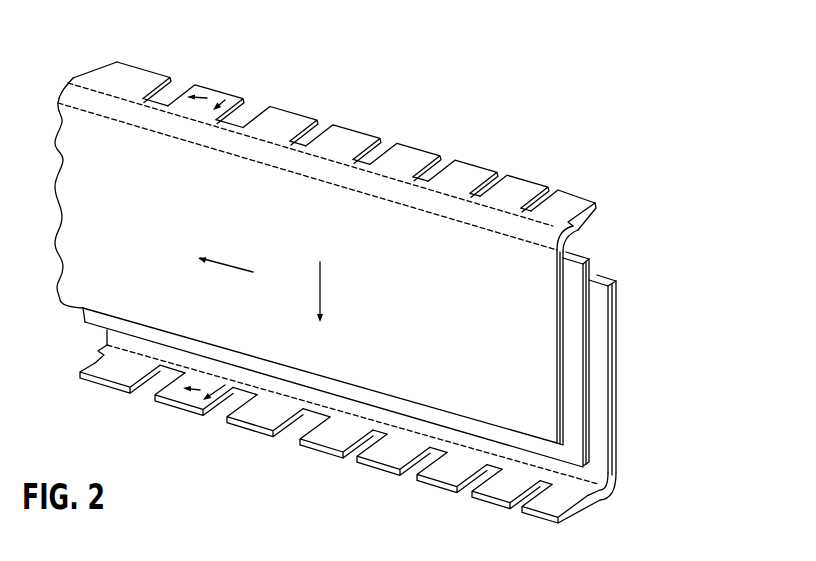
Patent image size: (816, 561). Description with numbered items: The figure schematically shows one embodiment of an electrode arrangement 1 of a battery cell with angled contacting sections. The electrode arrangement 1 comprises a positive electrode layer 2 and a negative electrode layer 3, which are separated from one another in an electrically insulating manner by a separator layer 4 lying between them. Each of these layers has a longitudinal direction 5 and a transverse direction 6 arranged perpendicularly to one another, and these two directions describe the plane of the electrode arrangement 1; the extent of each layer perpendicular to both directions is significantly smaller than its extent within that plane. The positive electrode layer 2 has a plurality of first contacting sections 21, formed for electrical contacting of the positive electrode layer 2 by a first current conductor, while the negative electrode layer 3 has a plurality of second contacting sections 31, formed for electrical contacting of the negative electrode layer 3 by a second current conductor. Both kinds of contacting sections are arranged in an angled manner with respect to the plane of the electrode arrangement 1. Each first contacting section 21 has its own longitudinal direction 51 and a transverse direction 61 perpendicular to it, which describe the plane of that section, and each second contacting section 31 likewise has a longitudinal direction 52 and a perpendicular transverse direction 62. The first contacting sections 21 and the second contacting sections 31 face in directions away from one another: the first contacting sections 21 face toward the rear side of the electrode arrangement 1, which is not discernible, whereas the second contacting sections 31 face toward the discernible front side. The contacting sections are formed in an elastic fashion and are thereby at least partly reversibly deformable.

The electrode arrangement 1 is at (635, 178).
The positive electrode layer 2 is at (565, 344).
The negative electrode layer 3 is at (617, 403).
The separator layer 4 is at (588, 373).
The first contacting sections 21 is at (460, 173).
The second contacting sections 31 is at (452, 468).
The longitudinal direction 5 is at (230, 262).
The transverse direction 6 is at (321, 289).
The longitudinal direction 51 is at (205, 96).
The transverse direction 61 is at (225, 101).
The longitudinal direction 52 is at (192, 392).
The transverse direction 62 is at (224, 386).